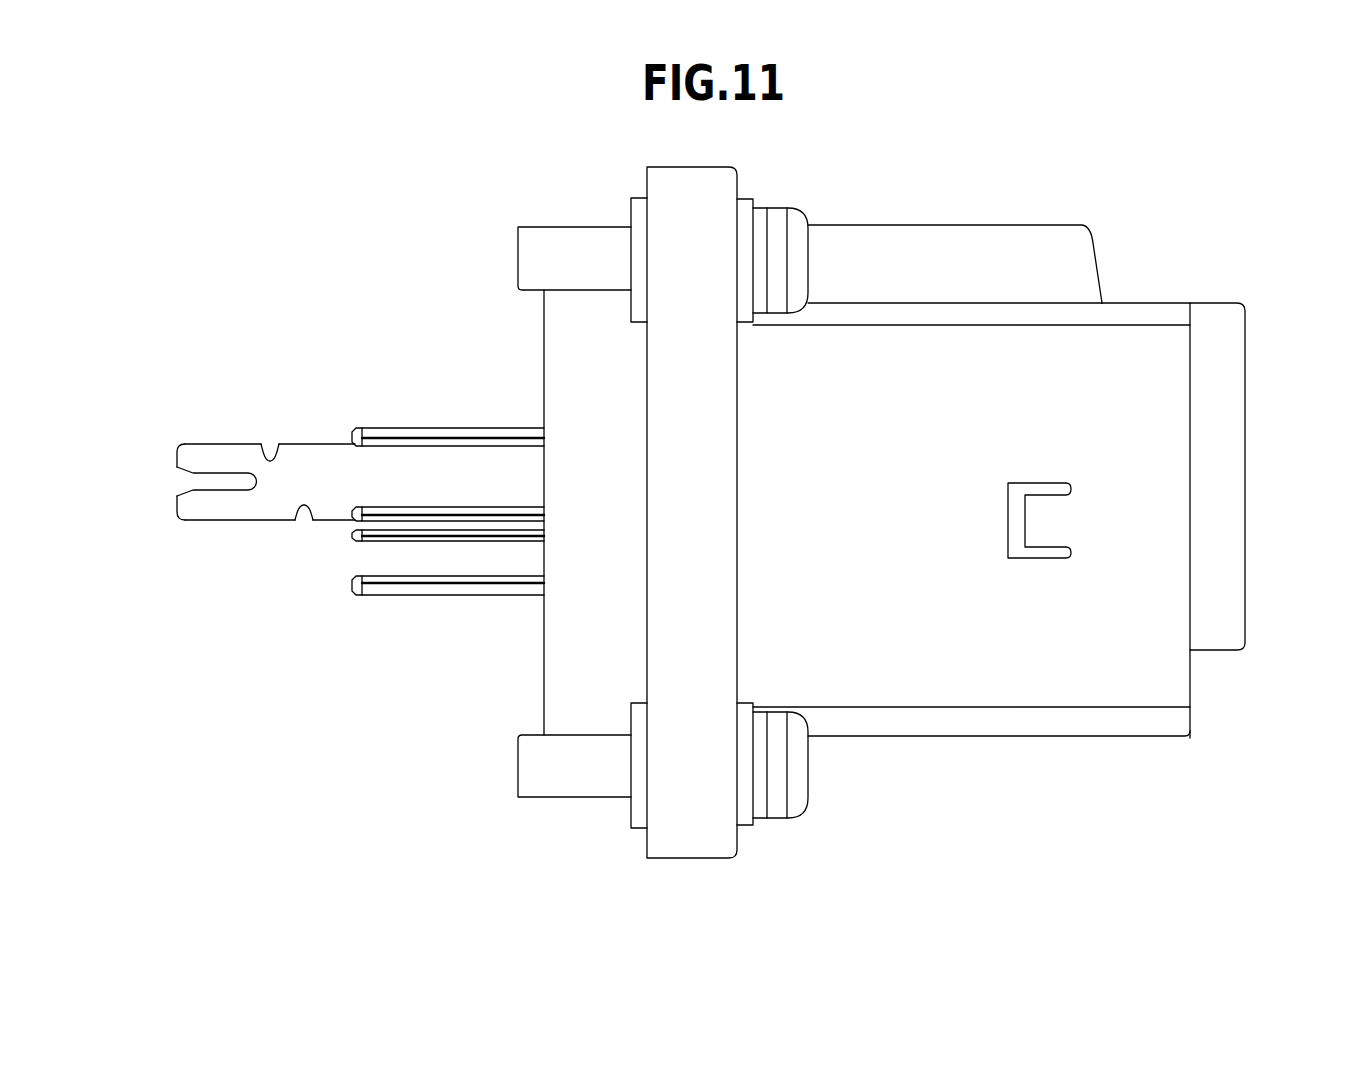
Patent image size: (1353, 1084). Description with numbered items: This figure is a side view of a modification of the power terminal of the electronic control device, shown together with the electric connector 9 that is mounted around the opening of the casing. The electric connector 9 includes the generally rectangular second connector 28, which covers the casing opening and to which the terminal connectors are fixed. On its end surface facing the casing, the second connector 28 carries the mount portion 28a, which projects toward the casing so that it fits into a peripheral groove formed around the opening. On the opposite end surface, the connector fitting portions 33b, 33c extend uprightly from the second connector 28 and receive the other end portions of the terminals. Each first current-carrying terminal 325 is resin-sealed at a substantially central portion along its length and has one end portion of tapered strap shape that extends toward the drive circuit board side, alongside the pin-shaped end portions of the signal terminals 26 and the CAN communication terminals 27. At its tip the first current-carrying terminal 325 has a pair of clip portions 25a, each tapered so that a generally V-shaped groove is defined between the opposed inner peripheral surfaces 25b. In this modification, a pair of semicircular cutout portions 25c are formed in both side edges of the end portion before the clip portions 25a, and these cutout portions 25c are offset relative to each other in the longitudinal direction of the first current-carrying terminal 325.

The electric connector 9 is at (1104, 208).
The first current-carrying terminal 325 is at (307, 444).
The clip portions 25a is at (208, 457).
The inner peripheral surfaces 25b is at (173, 472).
The cutout portions 25c is at (270, 459).
The signal terminals 26 is at (351, 436).
The CAN communication terminals 27 is at (481, 437).
The second connector 28 is at (699, 834).
The mount portion 28a is at (552, 706).
The connector fitting portion 33b is at (1241, 629).
The connector fitting portion 33c is at (1175, 680).